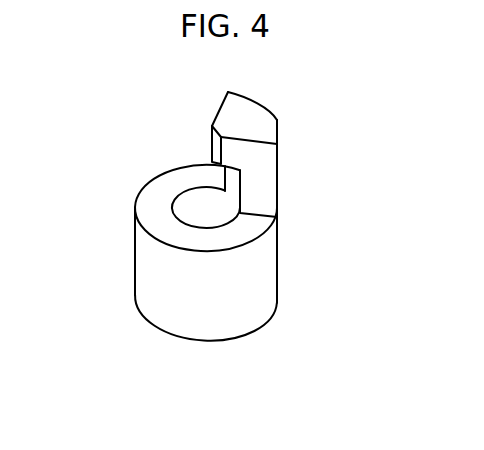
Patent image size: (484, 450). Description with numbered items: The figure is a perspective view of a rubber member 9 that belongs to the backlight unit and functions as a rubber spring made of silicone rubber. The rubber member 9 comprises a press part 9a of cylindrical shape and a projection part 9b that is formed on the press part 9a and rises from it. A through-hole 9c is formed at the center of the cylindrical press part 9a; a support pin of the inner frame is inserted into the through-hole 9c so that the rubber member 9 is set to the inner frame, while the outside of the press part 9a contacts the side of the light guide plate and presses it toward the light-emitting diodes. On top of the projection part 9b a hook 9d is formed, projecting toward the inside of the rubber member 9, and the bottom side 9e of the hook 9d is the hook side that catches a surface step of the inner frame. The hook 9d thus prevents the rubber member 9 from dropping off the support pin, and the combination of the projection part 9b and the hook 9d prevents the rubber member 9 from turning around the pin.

The rubber member 9 is at (225, 202).
The press part 9a is at (148, 284).
The projection part 9b is at (277, 124).
The through-hole 9c is at (190, 210).
The hook 9d is at (212, 124).
The bottom side of the hook 9e is at (211, 162).